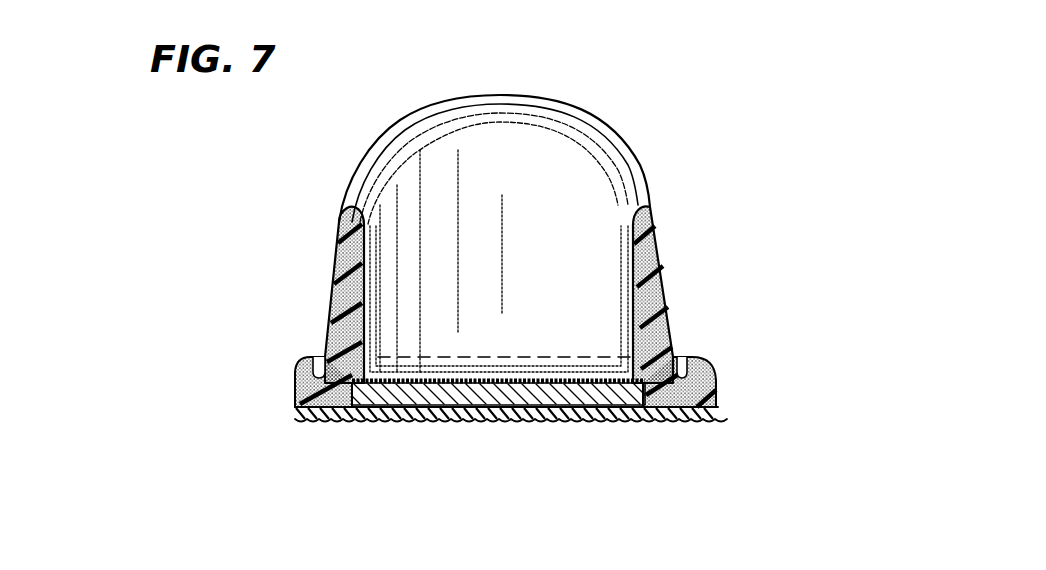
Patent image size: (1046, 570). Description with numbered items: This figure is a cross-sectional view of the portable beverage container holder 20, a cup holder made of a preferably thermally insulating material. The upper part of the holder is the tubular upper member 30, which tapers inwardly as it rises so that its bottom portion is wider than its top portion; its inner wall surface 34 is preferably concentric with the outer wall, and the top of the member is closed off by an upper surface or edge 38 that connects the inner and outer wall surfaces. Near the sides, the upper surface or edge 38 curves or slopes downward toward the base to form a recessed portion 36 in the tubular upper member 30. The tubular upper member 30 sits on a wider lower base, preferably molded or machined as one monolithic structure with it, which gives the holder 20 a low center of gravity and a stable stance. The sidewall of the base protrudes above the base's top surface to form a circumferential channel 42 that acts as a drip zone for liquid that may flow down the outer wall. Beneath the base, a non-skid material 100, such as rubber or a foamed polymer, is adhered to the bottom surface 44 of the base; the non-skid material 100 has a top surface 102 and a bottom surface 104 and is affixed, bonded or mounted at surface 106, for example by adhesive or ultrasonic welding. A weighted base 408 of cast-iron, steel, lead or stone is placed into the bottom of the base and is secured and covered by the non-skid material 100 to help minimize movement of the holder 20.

The beverage container holder 20 is at (160, 270).
The tubular upper member 30 is at (670, 268).
The inner wall surface 34 is at (365, 298).
The recessed portion 36 is at (647, 205).
The upper surface or edge 38 is at (507, 96).
The circumferential channel 42 is at (681, 358).
The bottom surface 44 is at (440, 422).
The non-skid material 100 is at (291, 419).
The top surface 102 is at (305, 380).
The bottom surface 104 is at (624, 422).
The mounting surface 106 is at (712, 404).
The weighted base 408 is at (533, 422).